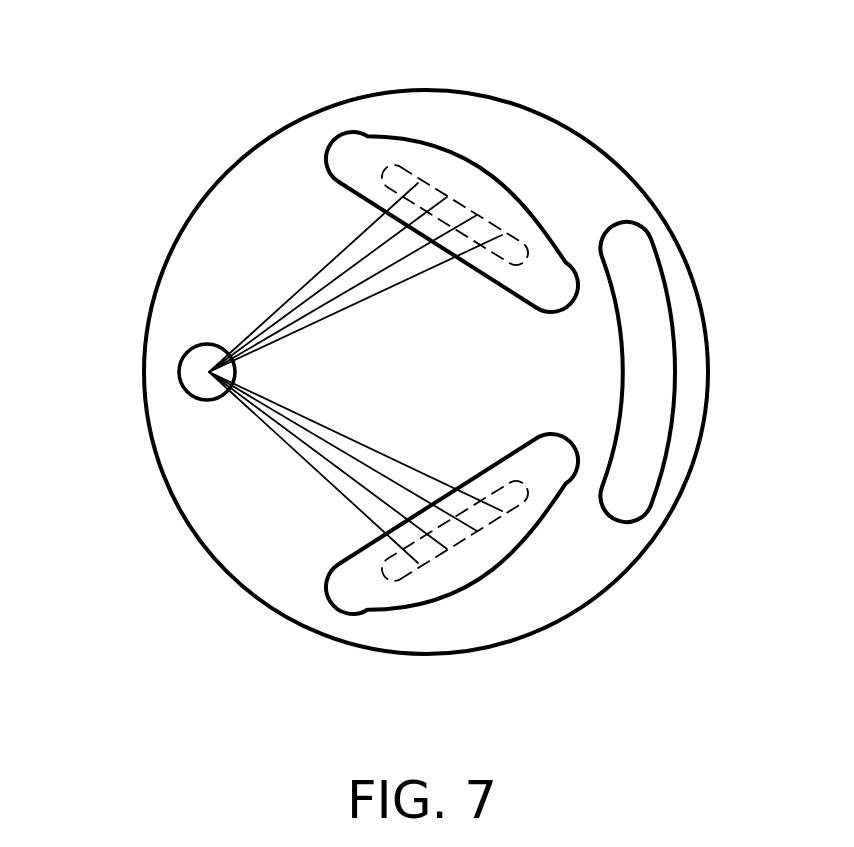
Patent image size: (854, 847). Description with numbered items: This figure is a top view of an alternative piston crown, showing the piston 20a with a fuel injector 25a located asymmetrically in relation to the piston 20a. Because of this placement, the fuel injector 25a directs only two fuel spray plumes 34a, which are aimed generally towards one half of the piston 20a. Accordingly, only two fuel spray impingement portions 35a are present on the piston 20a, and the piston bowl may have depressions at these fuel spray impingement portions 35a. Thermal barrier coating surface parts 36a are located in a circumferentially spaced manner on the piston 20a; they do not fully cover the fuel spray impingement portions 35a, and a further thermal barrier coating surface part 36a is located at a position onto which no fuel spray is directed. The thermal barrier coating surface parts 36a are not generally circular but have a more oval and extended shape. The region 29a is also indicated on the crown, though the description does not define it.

The piston 20a is at (627, 168).
The fuel injector 25a is at (177, 362).
The disc surface 29a is at (583, 550).
The fuel spray plumes 34a is at (307, 282).
The fuel spray impingement portions 35a is at (490, 210).
The thermal barrier coating surface parts 36a is at (453, 152).